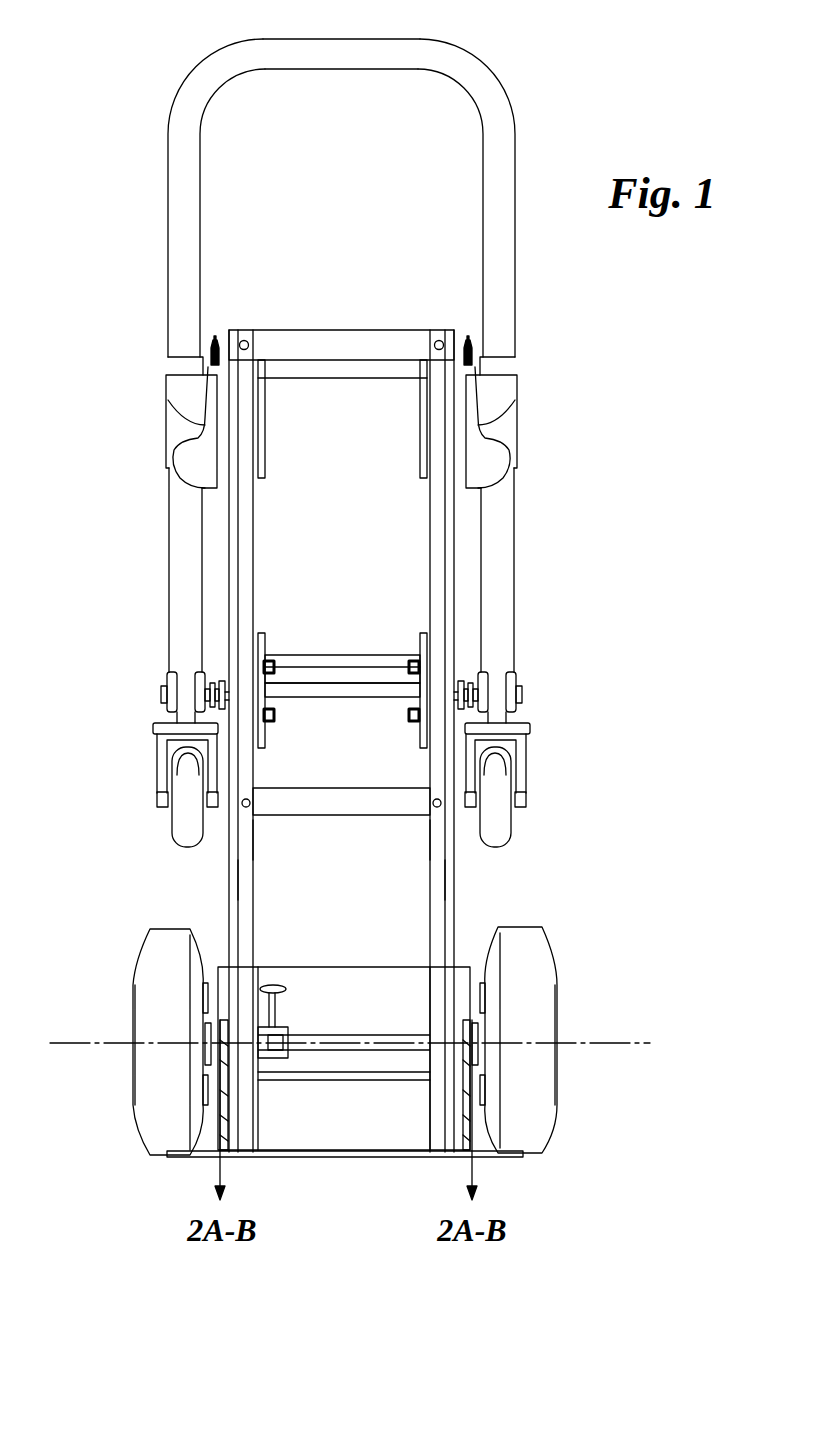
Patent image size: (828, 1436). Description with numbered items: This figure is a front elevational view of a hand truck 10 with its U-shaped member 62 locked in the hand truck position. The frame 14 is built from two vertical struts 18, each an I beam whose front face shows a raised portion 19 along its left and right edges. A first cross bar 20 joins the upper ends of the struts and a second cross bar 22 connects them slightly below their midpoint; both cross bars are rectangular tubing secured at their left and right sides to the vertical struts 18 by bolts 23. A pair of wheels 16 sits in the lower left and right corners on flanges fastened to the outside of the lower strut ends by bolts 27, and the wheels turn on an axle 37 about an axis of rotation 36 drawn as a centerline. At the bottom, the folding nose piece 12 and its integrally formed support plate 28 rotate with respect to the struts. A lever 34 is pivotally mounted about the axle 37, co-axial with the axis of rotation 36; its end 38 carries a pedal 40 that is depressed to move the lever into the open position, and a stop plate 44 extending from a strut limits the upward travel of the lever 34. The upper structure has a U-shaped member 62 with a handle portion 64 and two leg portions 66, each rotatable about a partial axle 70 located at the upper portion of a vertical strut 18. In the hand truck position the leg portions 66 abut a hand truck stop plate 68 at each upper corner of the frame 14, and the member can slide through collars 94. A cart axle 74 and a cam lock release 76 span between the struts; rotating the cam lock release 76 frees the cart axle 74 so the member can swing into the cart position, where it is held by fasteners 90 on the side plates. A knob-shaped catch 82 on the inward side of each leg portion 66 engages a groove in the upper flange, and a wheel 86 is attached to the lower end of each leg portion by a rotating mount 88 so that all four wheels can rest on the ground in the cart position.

The hand truck 10 is at (595, 510).
The nose piece 12 is at (515, 1155).
The frame 14 is at (455, 919).
The wheels 16 is at (158, 1118).
The vertical struts 18 is at (253, 536).
The raised portion 19 is at (253, 838).
The first cross bar 20 is at (342, 335).
The second cross bar 22 is at (333, 805).
The bolts 23 is at (246, 805).
The bolts 27 is at (248, 1147).
The support plate 28 is at (360, 1125).
The lever 34 is at (288, 1050).
The axis of rotation 36 is at (605, 1043).
The axle 37 is at (415, 1032).
The end 38 is at (288, 1000).
The pedal 40 is at (273, 985).
The stop plate 44 is at (295, 1003).
The U-shaped member 62 is at (441, 40).
The handle portion 64 is at (292, 55).
The leg portions 66 is at (178, 573).
The hand truck stop plate 68 is at (180, 453).
The partial axle 70 is at (170, 402).
The cart axle 74 is at (320, 688).
The cam lock release 76 is at (318, 662).
The catch 82 is at (172, 635).
The wheels 86 is at (182, 820).
The rotating mount 88 is at (158, 752).
The fasteners 90 is at (270, 652).
The collars 94 is at (175, 428).